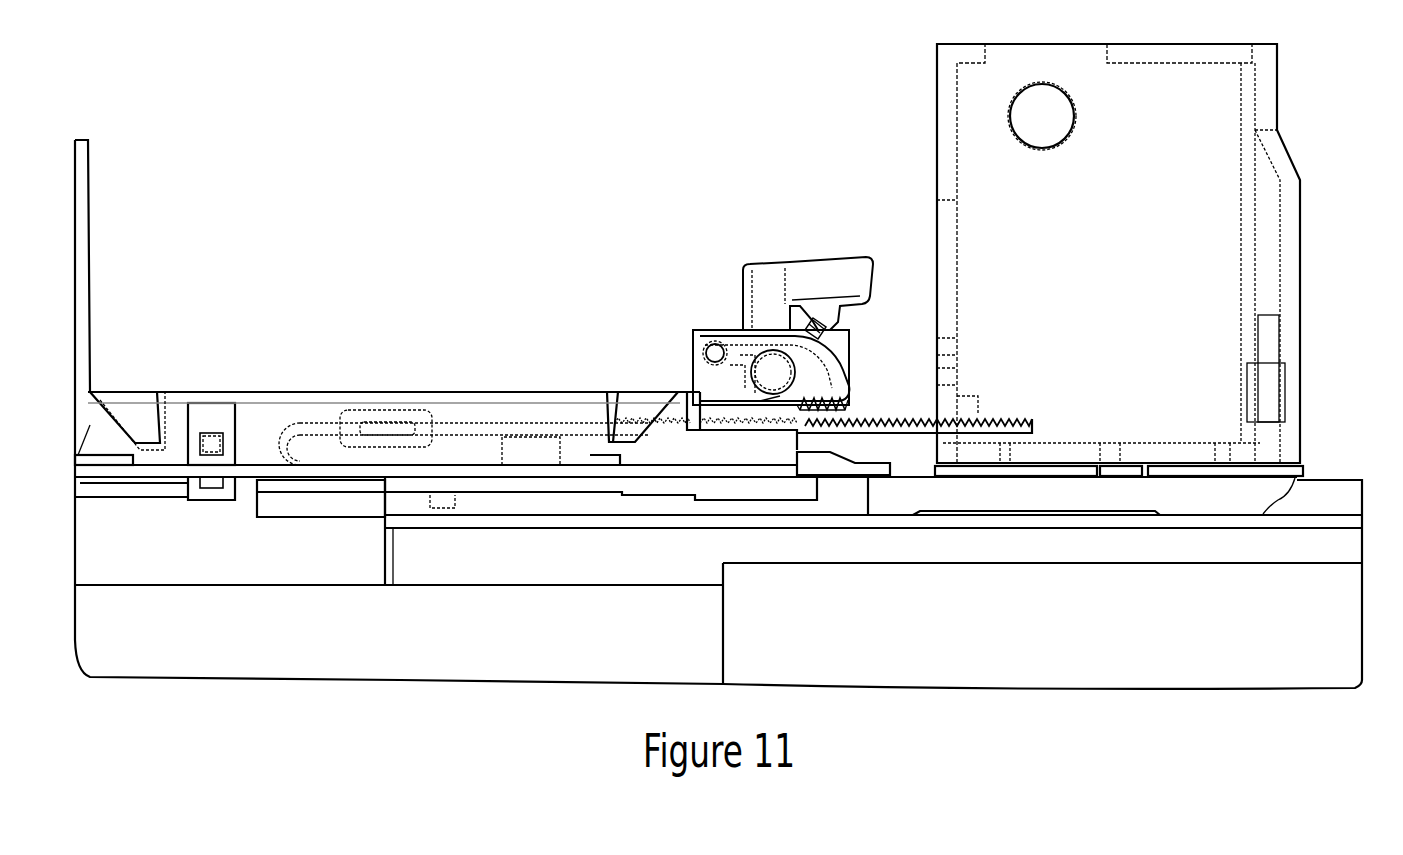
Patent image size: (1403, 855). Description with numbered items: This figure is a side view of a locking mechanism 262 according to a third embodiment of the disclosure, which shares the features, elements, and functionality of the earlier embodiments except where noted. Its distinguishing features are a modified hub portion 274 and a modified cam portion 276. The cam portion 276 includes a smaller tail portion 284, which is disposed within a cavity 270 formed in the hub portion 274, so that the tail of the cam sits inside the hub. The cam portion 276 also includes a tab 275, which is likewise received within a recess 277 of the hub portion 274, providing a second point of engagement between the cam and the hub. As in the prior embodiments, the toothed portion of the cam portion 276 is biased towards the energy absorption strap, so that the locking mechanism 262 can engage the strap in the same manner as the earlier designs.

The locking mechanism 262 is at (695, 298).
The cavity 270 is at (742, 352).
The hub portion 274 is at (775, 285).
The tail portion 284 is at (727, 355).
The cam portion 276 is at (762, 397).
The recess 277 is at (828, 330).
The tab 275 is at (802, 343).